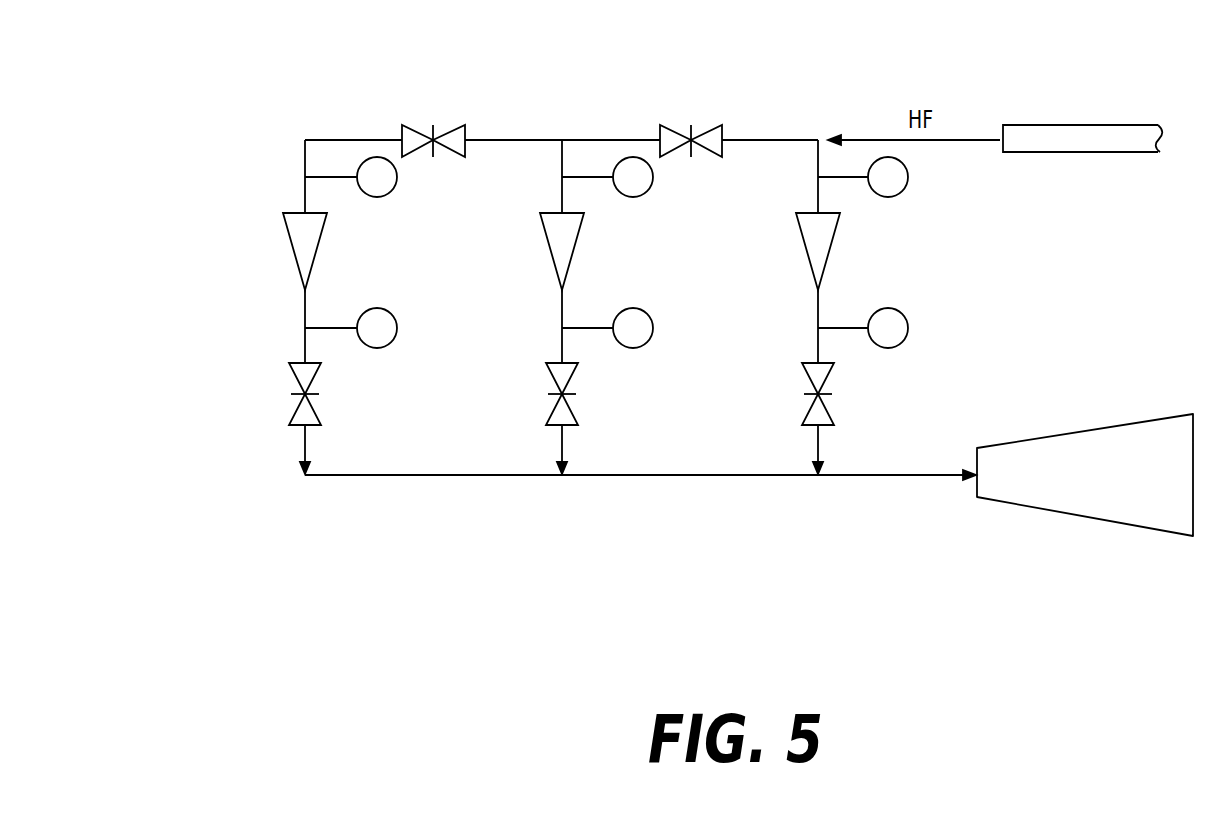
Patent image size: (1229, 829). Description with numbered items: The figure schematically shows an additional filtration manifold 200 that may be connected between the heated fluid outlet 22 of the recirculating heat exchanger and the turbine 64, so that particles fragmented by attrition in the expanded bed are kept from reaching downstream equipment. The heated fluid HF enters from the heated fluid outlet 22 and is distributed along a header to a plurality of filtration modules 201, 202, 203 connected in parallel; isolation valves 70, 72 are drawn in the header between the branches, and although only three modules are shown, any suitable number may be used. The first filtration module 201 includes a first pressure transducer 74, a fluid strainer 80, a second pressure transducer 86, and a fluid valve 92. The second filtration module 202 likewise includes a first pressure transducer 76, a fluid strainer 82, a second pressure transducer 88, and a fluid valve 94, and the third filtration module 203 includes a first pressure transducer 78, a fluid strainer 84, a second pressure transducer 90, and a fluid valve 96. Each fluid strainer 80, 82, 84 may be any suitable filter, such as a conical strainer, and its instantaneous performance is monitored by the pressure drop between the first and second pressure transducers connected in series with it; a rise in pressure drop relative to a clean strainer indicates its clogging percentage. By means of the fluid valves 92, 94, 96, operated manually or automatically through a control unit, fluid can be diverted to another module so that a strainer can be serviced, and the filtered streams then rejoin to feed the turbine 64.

The filtration manifold 200 is at (243, 130).
The heated fluid outlet 22 is at (1075, 123).
The isolation valve 70 is at (672, 128).
The isolation valve 72 is at (413, 128).
The first pressure transducer 74 is at (908, 177).
The first pressure transducer 76 is at (653, 177).
The first pressure transducer 78 is at (397, 177).
The fluid strainer 80 is at (805, 253).
The fluid strainer 82 is at (549, 253).
The fluid strainer 84 is at (292, 253).
The second pressure transducer 86 is at (908, 328).
The second pressure transducer 88 is at (653, 328).
The second pressure transducer 90 is at (397, 328).
The fluid valve 92 is at (826, 380).
The fluid valve 94 is at (570, 380).
The fluid valve 96 is at (313, 380).
The turbine 64 is at (1076, 432).
The first filtration module 201 is at (877, 493).
The second filtration module 202 is at (665, 492).
The third filtration module 203 is at (312, 490).